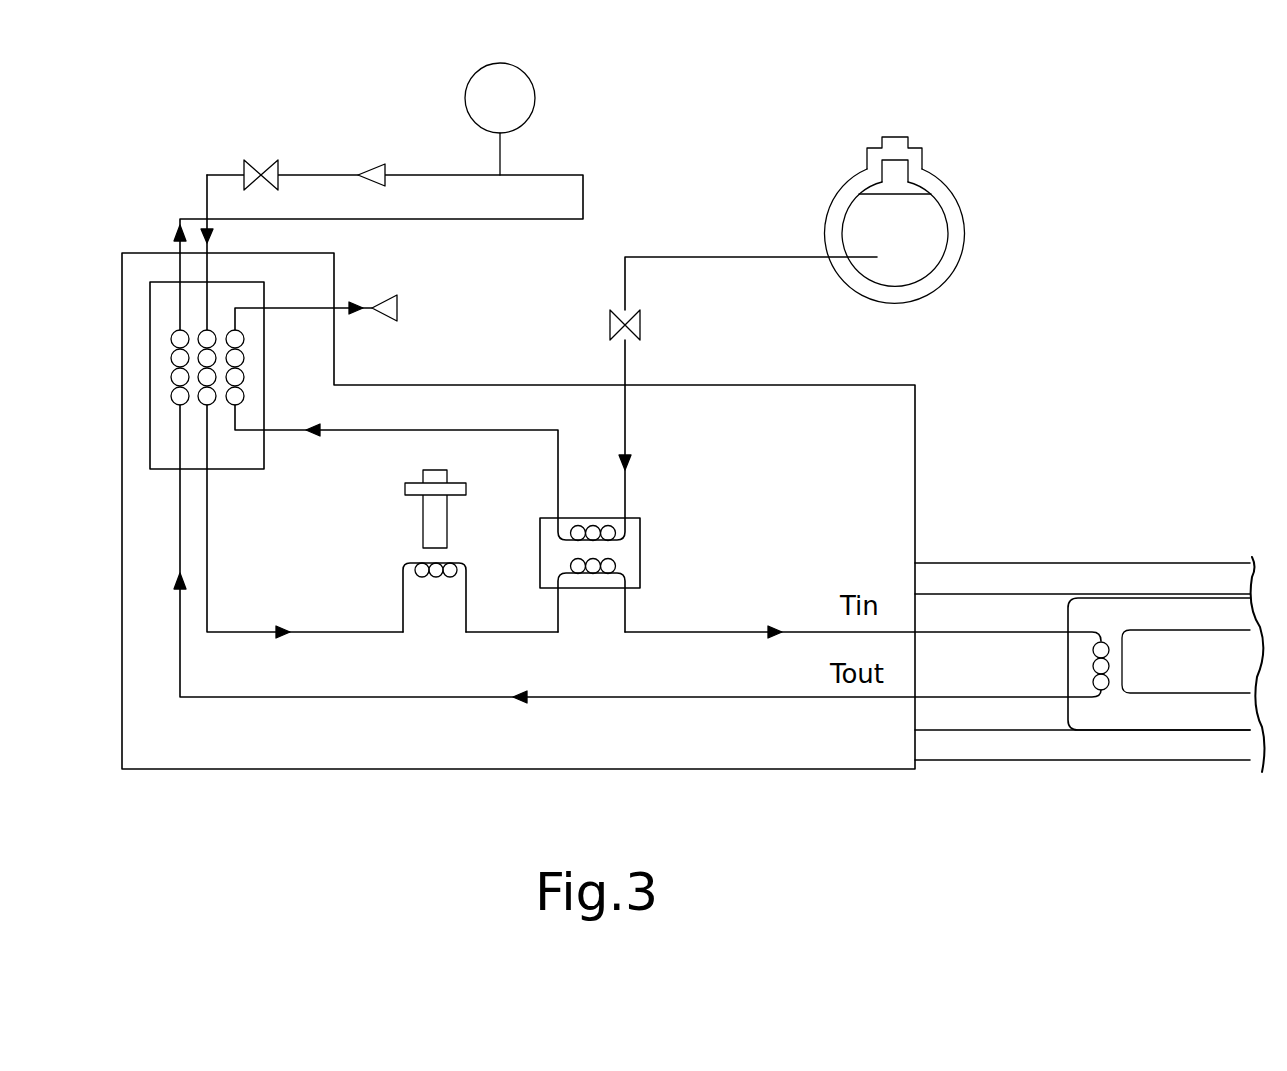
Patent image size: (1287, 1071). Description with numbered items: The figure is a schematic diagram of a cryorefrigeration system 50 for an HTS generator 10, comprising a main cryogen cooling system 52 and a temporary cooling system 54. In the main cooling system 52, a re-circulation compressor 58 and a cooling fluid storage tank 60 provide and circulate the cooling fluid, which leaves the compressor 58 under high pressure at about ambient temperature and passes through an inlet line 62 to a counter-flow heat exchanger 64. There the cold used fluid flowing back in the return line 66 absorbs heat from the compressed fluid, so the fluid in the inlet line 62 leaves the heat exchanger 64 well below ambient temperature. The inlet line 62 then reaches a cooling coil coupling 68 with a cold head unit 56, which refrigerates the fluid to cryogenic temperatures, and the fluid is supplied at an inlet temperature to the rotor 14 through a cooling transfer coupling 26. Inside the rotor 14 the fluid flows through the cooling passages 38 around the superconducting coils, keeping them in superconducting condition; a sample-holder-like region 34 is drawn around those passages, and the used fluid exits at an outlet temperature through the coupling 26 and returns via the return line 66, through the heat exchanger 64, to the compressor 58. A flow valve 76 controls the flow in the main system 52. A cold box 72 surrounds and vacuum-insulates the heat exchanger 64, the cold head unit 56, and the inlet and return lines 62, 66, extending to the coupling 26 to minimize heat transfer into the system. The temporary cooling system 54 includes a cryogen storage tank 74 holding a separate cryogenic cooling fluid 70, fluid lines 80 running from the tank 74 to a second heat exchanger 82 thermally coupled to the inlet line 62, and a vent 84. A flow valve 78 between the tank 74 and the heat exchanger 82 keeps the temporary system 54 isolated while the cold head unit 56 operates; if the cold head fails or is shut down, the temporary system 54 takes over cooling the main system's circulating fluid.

The HTS generator 10 is at (1172, 572).
The rotor 14 is at (1216, 679).
The cooling transfer coupling 26 is at (918, 650).
The sample holder 34 is at (1175, 708).
The cooling passages 38 is at (1093, 640).
The cryorefrigeration system 50 is at (692, 197).
The main cryogen cooling system 52 is at (458, 668).
The temporary cooling system 54 is at (600, 365).
The cold head unit 56 is at (423, 516).
The re-circulation compressor 58 is at (360, 172).
The cooling fluid storage tank 60 is at (530, 82).
The inlet line 62 is at (216, 172).
The counter-flow heat exchanger 64 is at (150, 437).
The return line 66 is at (352, 220).
The cooling coil coupling 68 is at (403, 565).
The cryogenic cooling fluid 70 is at (918, 240).
The cold box 72 is at (443, 385).
The cryogen storage tank 74 is at (952, 252).
The flow valve 76 is at (279, 176).
The flow valve 78 is at (616, 322).
The fluid lines 80 is at (625, 367).
The second heat exchanger 82 is at (633, 515).
The vent 84 is at (385, 322).